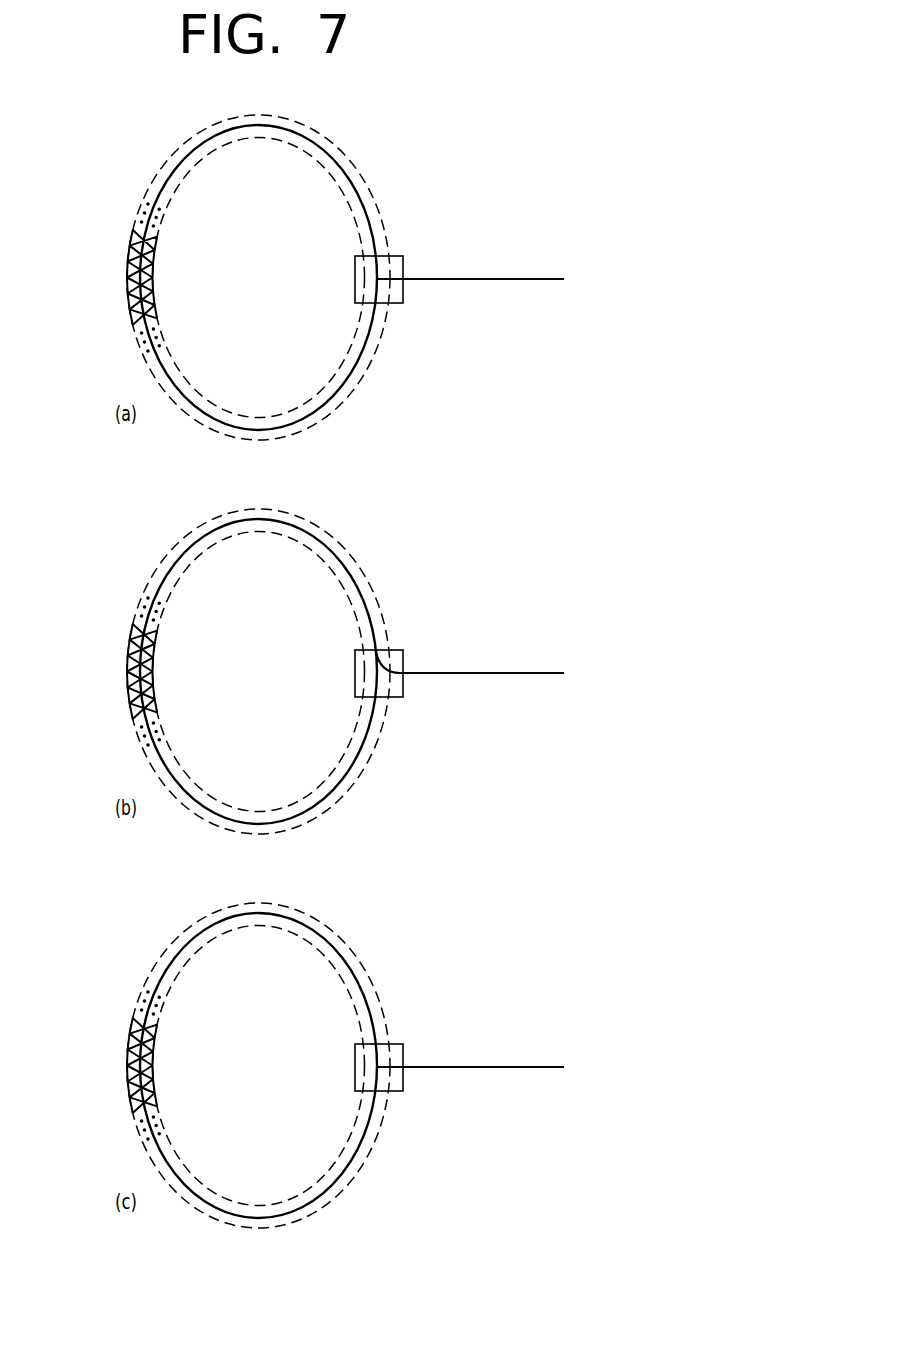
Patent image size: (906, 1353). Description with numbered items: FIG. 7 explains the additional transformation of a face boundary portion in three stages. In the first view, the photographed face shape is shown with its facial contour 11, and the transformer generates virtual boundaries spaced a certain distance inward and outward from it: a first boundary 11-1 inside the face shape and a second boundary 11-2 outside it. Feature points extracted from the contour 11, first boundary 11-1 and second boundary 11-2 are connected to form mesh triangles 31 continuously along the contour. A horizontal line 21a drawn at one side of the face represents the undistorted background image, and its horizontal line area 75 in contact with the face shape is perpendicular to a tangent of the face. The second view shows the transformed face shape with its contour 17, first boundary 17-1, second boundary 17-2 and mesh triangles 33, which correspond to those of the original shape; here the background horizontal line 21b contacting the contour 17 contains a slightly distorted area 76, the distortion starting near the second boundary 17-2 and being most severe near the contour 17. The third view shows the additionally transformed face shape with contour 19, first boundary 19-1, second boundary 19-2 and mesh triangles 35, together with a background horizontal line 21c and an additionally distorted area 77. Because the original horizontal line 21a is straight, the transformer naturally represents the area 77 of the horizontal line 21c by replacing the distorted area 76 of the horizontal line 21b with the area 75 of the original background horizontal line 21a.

The facial contour 11 is at (337, 163).
The first boundary 11-1 is at (340, 190).
The second boundary 11-2 is at (365, 180).
The mesh triangles 31 is at (135, 238).
The horizontal line area 75 is at (396, 303).
The horizontal line 21a is at (515, 279).
The contour 17 is at (258, 655).
The first boundary 17-1 is at (259, 672).
The second boundary 17-2 is at (287, 671).
The mesh triangles 33 is at (107, 671).
The distorted area 76 is at (393, 707).
The horizontal line 21b is at (470, 637).
The contour 19 is at (258, 1049).
The first boundary 19-1 is at (259, 1066).
The second boundary 19-2 is at (287, 1065).
The mesh triangles 35 is at (107, 1065).
The additionally distorted area 77 is at (393, 1101).
The horizontal line 21c is at (471, 1031).